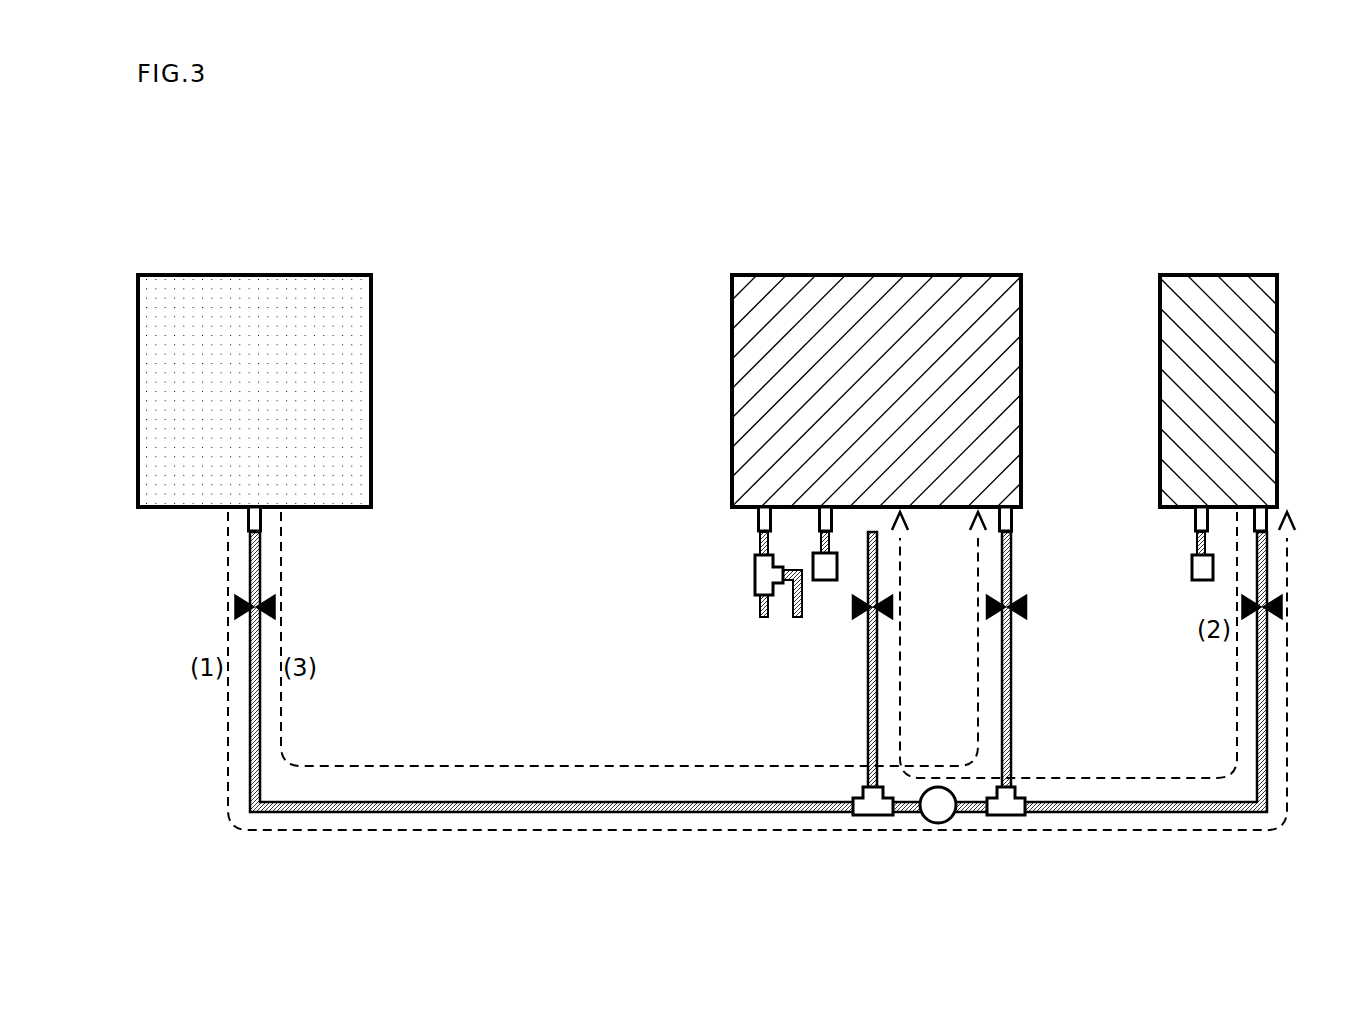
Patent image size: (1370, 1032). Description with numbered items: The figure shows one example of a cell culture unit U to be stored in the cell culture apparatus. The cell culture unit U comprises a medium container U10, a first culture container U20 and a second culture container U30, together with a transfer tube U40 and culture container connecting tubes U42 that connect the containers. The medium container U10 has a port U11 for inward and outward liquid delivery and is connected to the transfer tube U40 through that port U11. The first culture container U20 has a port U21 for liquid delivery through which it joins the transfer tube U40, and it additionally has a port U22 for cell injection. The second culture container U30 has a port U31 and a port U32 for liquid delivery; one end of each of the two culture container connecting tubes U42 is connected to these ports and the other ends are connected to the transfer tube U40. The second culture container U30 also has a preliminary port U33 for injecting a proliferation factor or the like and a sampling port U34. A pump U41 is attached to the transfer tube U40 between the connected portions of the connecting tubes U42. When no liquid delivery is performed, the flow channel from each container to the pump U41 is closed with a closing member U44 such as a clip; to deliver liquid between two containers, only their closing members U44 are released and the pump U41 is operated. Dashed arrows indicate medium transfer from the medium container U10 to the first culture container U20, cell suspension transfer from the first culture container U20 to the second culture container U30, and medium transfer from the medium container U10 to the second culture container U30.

The cell culture unit U is at (1298, 197).
The medium container U10 is at (255, 275).
The port U11 is at (262, 520).
The first culture container U20 is at (1218, 275).
The port U21 is at (1268, 518).
The port for cell injection U22 is at (1195, 516).
The second culture container U30 is at (875, 275).
The port U31 is at (1013, 518).
The port U32 is at (902, 528).
The preliminary port U33 is at (827, 522).
The sampling port U34 is at (758, 517).
The transfer tube U40 is at (568, 807).
The pump U41 is at (938, 823).
The culture container connecting tubes U42 is at (877, 650).
The closing member U44 is at (274, 607).